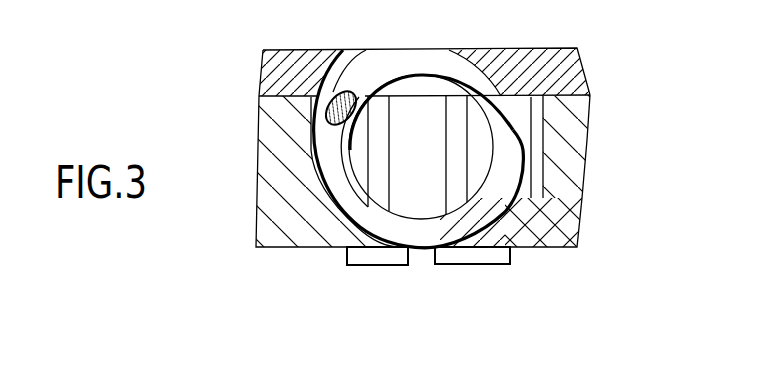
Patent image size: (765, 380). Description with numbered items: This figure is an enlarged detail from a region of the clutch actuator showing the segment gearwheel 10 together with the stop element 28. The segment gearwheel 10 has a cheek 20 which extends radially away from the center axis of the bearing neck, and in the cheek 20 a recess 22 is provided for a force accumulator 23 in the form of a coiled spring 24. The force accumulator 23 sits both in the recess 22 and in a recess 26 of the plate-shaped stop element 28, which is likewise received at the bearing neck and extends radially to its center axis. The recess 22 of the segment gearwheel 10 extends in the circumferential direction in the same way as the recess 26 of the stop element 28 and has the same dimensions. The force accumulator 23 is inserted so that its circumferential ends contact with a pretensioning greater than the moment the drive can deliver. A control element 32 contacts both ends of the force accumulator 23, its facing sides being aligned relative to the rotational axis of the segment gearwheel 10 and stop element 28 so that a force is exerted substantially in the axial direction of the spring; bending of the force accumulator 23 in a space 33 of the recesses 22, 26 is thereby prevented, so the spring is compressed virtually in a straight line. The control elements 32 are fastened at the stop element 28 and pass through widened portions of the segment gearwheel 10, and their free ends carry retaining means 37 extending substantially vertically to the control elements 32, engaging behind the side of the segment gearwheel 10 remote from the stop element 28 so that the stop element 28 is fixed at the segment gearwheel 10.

The segment gearwheel 10 is at (265, 217).
The cheek 20 is at (565, 245).
The recess 22 is at (512, 198).
The force accumulator 23 is at (492, 85).
The coiled spring 24 is at (332, 133).
The recess 26 is at (361, 62).
The stop element 28 is at (560, 70).
The control element 32 is at (400, 232).
The space 33 is at (545, 168).
The retaining means 37 is at (367, 257).